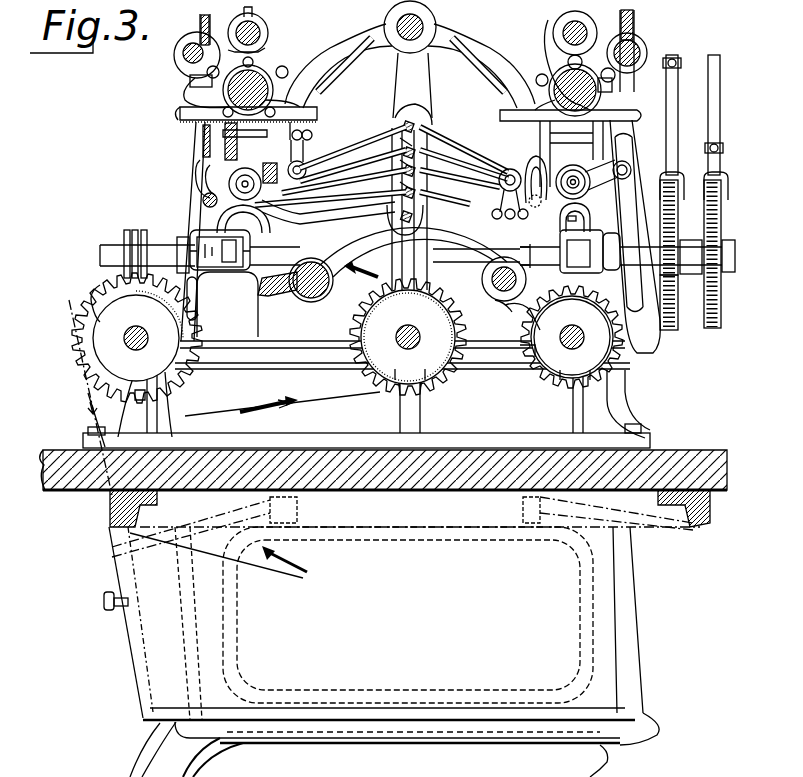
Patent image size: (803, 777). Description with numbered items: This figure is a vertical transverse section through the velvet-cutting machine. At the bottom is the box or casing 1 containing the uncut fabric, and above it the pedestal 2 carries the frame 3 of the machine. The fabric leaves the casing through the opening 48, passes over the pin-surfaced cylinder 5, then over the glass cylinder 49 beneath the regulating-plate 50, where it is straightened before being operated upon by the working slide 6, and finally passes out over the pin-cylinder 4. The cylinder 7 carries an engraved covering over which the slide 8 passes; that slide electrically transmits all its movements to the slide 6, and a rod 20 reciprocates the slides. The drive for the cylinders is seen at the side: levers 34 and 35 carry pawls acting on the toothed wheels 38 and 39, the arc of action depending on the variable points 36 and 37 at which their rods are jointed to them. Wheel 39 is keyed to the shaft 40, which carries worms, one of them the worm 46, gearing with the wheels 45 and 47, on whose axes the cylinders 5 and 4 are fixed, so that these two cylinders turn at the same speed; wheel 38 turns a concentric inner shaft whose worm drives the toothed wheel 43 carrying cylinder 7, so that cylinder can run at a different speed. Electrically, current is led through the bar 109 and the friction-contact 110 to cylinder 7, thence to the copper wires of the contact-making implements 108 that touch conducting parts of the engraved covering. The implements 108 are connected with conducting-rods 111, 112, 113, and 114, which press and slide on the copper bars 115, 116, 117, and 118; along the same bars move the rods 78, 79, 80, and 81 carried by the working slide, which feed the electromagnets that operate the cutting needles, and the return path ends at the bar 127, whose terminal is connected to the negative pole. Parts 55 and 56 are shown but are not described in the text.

The box or casing 1 is at (175, 562).
The pedestal 2 is at (452, 478).
The frame 3 is at (357, 32).
The cylinder 4 is at (137, 338).
The cylinder 5 is at (408, 337).
The slide 6 is at (243, 230).
The cylinder 7 is at (572, 337).
The slide 8 is at (575, 230).
The rod 20 is at (266, 31).
The lever 34 is at (714, 98).
The lever 35 is at (672, 104).
The point 36 is at (710, 152).
The point 37 is at (674, 58).
The toothed wheel 38 is at (678, 322).
The toothed wheel 39 is at (672, 292).
The shaft 40 is at (728, 248).
The toothed wheel 43 is at (556, 385).
The wheel 45 is at (390, 390).
The worm 46 is at (150, 225).
The wheel 47 is at (100, 289).
The opening 48 is at (112, 488).
The glass cylinder 49 is at (300, 300).
The regulating-plate 50 is at (268, 296).
The roller 55 is at (187, 66).
The roller 56 is at (222, 94).
The rod 78 is at (335, 195).
The rod 79 is at (368, 178).
The rod 80 is at (395, 160).
The rod 81 is at (398, 127).
The contact-making implements 108 is at (523, 347).
The bar 109 is at (490, 282).
The friction-contact 110 is at (520, 306).
The conducting-rod 111 is at (370, 227).
The conducting-rod 112 is at (462, 178).
The conducting-rod 113 is at (418, 128).
The conducting-rod 114 is at (460, 152).
The copper bar 115 is at (426, 202).
The copper bar 116 is at (393, 198).
The copper bar 117 is at (534, 152).
The copper bar 118 is at (406, 120).
The bar 127 is at (203, 143).